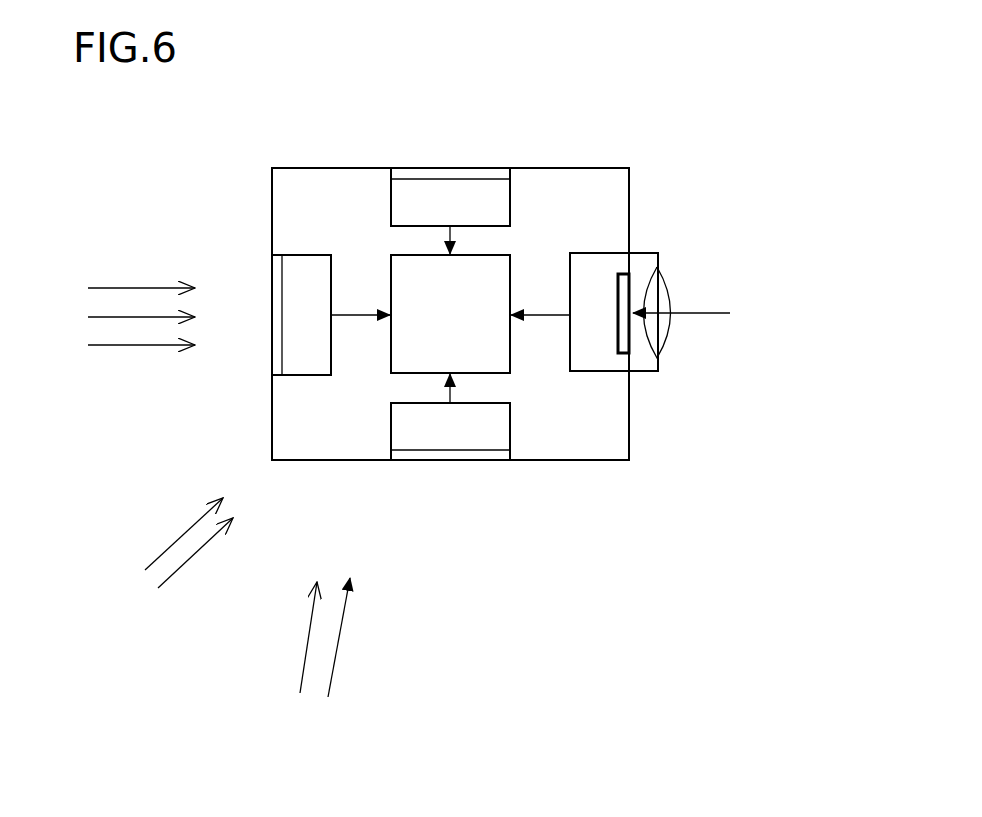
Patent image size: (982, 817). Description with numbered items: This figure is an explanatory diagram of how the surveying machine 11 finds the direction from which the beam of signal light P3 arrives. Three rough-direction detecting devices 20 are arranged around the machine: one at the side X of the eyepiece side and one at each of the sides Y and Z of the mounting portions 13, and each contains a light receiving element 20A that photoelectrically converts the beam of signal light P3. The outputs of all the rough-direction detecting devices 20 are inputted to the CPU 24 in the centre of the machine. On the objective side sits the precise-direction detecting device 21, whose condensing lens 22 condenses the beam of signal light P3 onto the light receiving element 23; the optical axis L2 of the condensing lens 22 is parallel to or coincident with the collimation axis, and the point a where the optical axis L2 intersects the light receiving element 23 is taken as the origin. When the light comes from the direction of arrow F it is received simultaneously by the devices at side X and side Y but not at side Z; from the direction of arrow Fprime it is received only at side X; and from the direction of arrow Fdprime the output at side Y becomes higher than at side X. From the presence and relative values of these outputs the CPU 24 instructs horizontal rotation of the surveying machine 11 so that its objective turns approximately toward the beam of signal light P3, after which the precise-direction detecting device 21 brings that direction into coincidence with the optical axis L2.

The surveying machine 11 is at (591, 165).
The mounting portion 13 is at (420, 166).
The rough-direction detecting device 20 is at (302, 268).
The light receiving element 20A is at (463, 172).
The precise-direction detecting device 21 is at (640, 253).
The condensing lens 22 is at (662, 330).
The light receiving element 23 is at (617, 328).
The CPU 24 is at (450, 314).
The optical axis L2 is at (713, 313).
The point a is at (634, 312).
The side X is at (270, 408).
The side Y is at (552, 462).
The side Z is at (377, 165).
The arrow F is at (158, 540).
The arrow F' Fprime is at (110, 280).
The arrow F'' Fdprime is at (292, 672).
The beam of signal light P3 is at (117, 350).